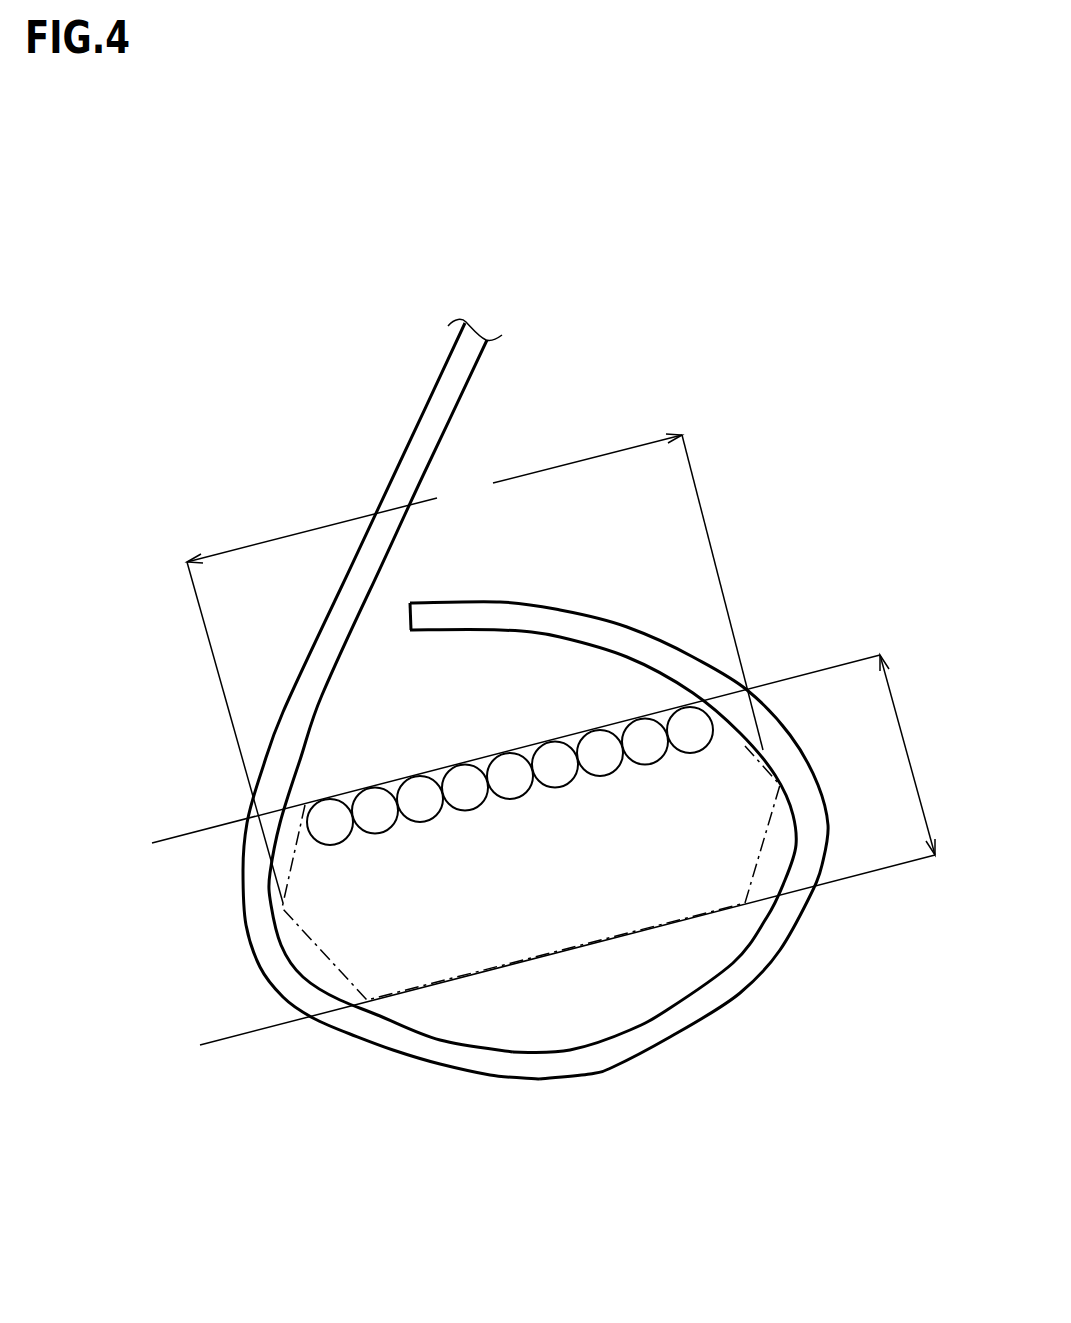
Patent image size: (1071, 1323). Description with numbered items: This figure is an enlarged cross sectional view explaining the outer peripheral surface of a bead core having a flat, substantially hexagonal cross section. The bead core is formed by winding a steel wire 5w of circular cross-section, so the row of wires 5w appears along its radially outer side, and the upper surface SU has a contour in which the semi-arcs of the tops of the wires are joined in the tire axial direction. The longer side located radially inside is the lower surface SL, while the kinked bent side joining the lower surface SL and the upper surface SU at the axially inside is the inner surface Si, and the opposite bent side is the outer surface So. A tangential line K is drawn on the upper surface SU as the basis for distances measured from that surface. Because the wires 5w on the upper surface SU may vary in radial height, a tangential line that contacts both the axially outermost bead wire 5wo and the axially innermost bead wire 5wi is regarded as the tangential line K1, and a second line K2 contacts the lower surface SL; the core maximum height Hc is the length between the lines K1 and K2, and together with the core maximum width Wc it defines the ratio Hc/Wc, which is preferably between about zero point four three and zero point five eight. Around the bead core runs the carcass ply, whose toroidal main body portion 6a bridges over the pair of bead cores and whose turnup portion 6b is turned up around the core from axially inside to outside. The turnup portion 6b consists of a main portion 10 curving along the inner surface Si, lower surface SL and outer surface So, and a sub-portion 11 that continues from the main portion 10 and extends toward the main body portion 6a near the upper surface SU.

The main body portion 6a is at (417, 407).
The turnup portion 6b is at (717, 657).
The sub-portion 11 is at (487, 603).
The steel wire 5w is at (375, 815).
The axially innermost bead wire 5wi is at (330, 827).
The axially outermost bead wire 5wo is at (692, 737).
The main portion 10 is at (617, 1047).
The lower surface SL is at (530, 967).
The tangential line K1 is at (850, 662).
The line contacting lower surface K2 is at (863, 873).
The tangential line K is at (222, 822).
The core maximum width Wc is at (475, 668).
The core maximum height Hc is at (915, 755).
The inner surface Si is at (282, 884).
The outer surface So is at (763, 750).
The upper surface SU is at (618, 713).